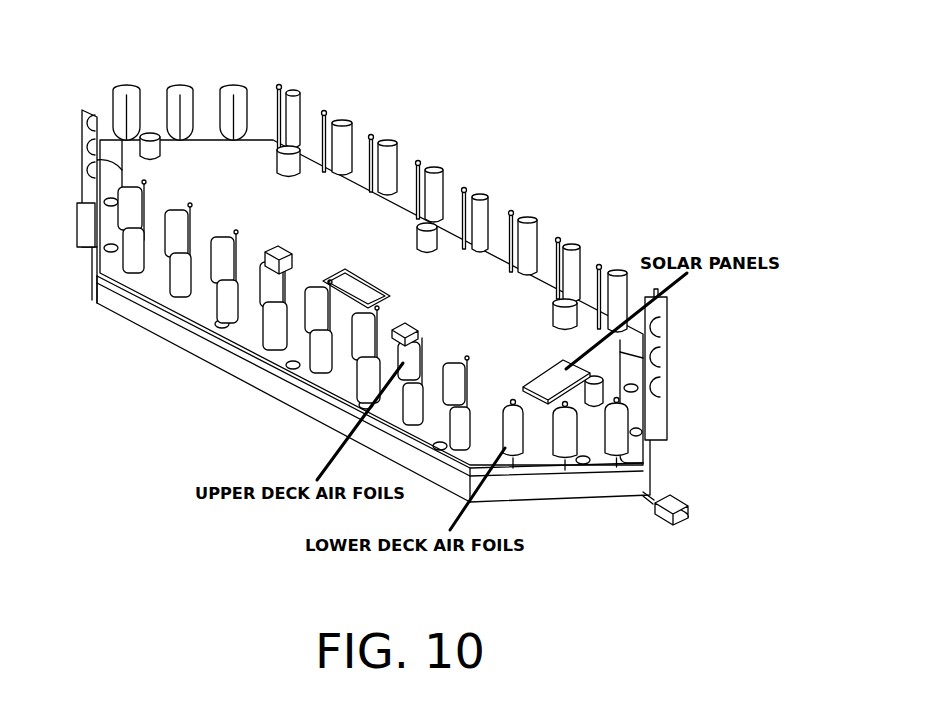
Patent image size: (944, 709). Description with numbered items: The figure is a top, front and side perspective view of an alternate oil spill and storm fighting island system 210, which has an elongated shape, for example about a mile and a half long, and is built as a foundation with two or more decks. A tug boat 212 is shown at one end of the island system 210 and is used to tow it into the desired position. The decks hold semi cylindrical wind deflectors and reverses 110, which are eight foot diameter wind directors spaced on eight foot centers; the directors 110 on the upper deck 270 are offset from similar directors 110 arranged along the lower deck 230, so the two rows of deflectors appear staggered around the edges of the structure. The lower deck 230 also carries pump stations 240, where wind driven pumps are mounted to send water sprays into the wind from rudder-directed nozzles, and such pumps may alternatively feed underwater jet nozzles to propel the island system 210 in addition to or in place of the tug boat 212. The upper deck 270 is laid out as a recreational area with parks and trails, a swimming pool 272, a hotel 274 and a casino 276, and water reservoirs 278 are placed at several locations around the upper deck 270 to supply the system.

The oil spill and storm fighting island system 210 is at (684, 109).
The water reservoirs 278 is at (294, 158).
The swimming pool 272 is at (378, 292).
The upper deck 270 is at (517, 300).
The semi cylindrical wind deflectors and reverses 110 is at (668, 329).
The pump stations 240 is at (99, 273).
The casino 276 is at (266, 258).
The hotel 274 is at (399, 329).
The lower deck 230 is at (540, 462).
The tug boat 212 is at (690, 511).